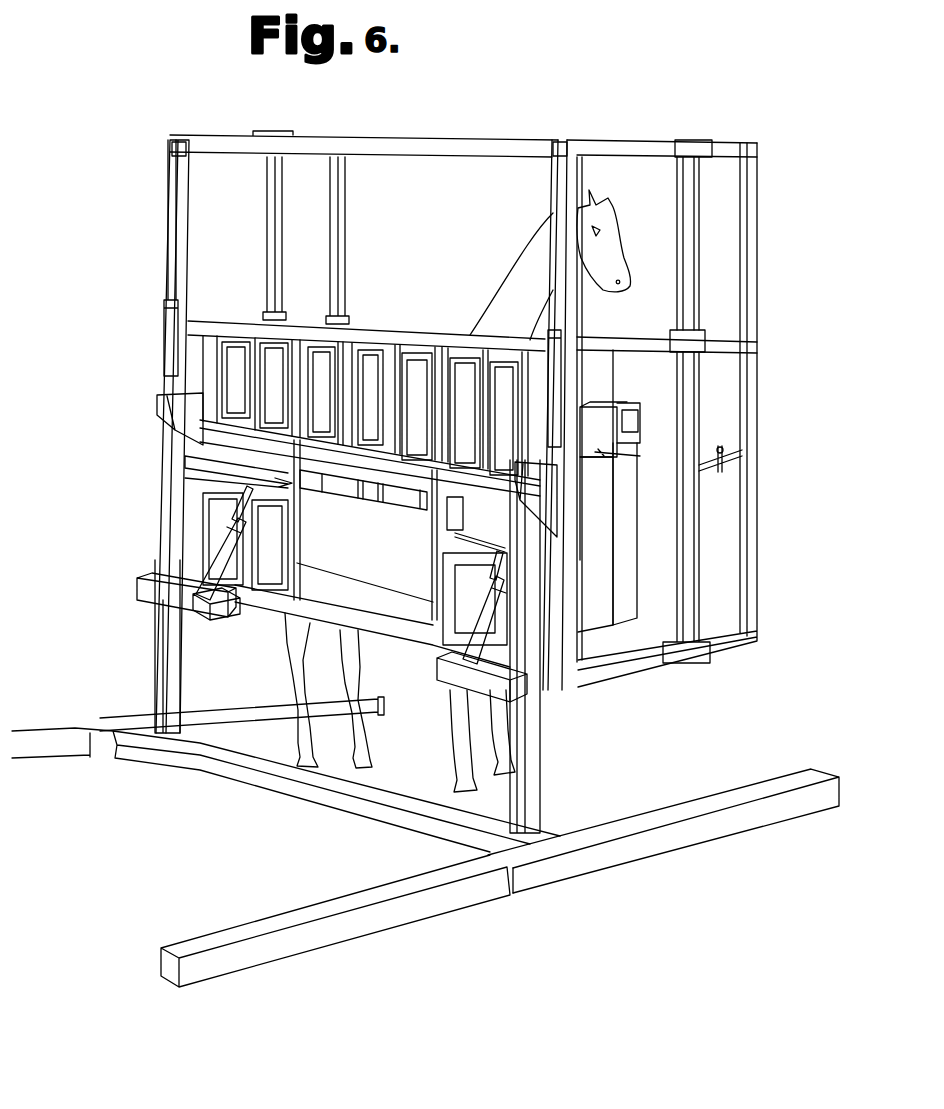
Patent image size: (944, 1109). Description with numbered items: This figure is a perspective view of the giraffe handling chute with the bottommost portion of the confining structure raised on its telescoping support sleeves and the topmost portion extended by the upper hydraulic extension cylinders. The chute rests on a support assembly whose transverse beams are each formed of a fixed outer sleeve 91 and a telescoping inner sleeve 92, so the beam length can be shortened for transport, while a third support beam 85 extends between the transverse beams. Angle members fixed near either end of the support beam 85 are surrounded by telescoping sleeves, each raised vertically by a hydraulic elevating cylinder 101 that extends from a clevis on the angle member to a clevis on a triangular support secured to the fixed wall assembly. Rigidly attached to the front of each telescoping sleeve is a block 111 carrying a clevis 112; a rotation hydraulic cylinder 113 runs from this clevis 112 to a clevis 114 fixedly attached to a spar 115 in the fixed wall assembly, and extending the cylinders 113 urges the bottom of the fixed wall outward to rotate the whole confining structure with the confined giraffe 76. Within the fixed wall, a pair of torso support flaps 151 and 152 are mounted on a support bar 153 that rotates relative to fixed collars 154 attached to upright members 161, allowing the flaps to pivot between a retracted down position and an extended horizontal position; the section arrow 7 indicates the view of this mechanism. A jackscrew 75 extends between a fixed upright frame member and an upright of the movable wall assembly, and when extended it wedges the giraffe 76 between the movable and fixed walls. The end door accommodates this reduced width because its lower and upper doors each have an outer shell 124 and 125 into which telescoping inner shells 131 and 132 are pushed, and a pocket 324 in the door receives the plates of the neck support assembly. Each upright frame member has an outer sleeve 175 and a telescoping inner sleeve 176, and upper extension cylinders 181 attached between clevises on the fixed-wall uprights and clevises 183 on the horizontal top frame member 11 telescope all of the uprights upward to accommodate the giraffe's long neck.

The horizontal top frame member 11 is at (497, 136).
The clevis 183 is at (171, 146).
The upper extension cylinder 181 is at (167, 336).
The telescoping inner sleeve 176 is at (697, 240).
The outer sleeve 175 is at (697, 349).
The jackscrew 75 is at (727, 446).
The giraffe 76 is at (530, 263).
The pocket 324 is at (632, 412).
The outer shell 125 is at (610, 446).
The telescoping inner shell 132 is at (632, 452).
The telescoping inner shell 131 is at (636, 553).
The outer shell 124 is at (576, 562).
The spar 115 is at (250, 487).
The rotation hydraulic cylinder 113 is at (215, 542).
The clevis 114 is at (500, 553).
The block 111 is at (150, 590).
The clevis 112 is at (193, 610).
The hydraulic elevating cylinder 101 is at (160, 690).
The torso support flap 151 is at (363, 513).
The torso support flap 152 is at (368, 500).
The support bar 153 is at (342, 495).
The fixed collar 154 is at (397, 501).
The upright member 161 is at (437, 556).
The section view arrow (FIG. 7) 7 is at (298, 438).
The third support beam 85 is at (292, 790).
The telescoping inner sleeve 92 is at (305, 906).
The fixed outer sleeve 91 is at (580, 872).